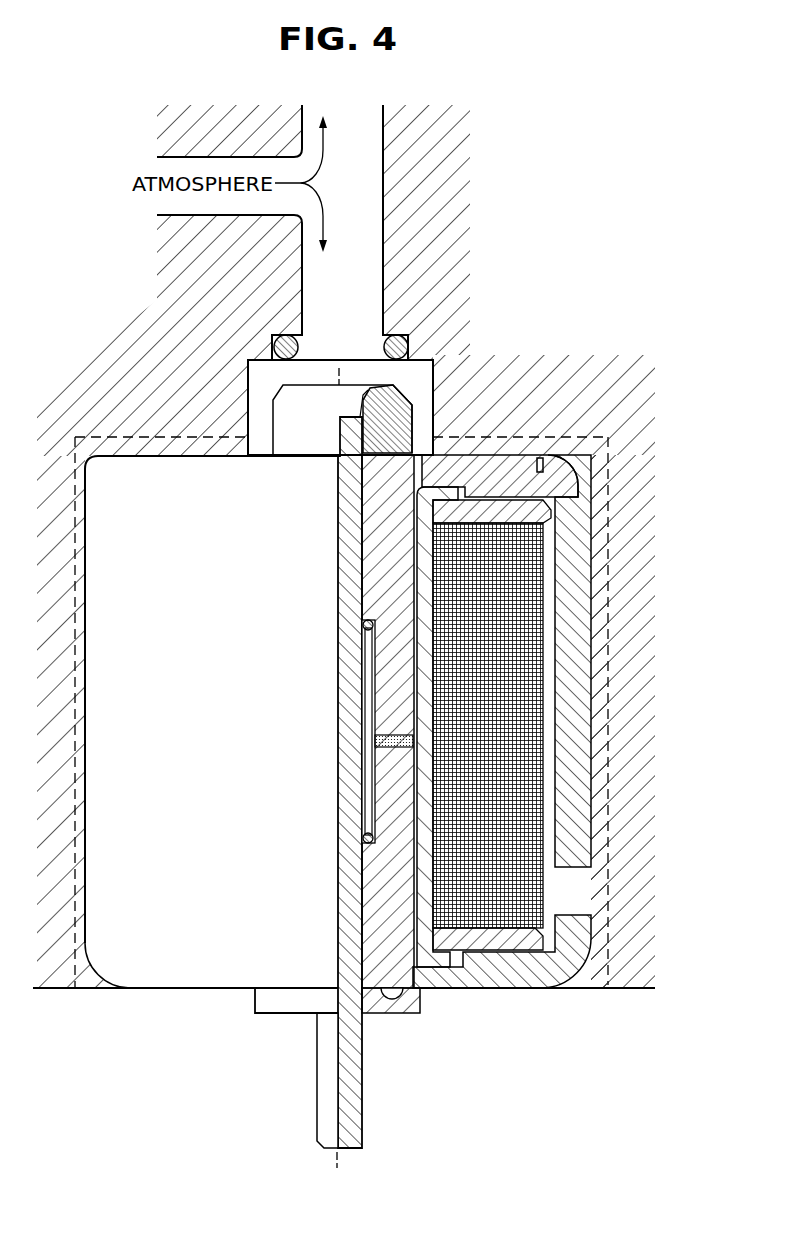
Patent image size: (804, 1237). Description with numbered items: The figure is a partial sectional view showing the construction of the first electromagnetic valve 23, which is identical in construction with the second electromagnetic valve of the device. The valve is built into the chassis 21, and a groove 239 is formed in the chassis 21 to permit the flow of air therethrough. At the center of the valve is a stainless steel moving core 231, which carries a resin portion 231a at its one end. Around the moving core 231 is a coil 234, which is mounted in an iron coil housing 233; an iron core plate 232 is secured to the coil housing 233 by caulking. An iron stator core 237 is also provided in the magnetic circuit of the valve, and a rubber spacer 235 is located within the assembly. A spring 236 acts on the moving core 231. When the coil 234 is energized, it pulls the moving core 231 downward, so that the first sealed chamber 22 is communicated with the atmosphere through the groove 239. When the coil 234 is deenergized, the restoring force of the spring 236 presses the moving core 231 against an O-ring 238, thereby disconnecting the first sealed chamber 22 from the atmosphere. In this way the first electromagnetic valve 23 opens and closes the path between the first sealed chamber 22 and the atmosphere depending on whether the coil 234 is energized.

The chassis 21 is at (694, 718).
The first sealed chamber 22 is at (513, 1048).
The first electromagnetic valve 23 is at (191, 988).
The moving core 231 is at (345, 532).
The resin portion 231a is at (412, 396).
The core plate 232 is at (522, 467).
The coil housing 233 is at (582, 537).
The coil 234 is at (527, 657).
The rubber spacer 235 is at (408, 743).
The spring 236 is at (368, 795).
The stator core 237 is at (405, 887).
The O-ring 238 is at (296, 343).
The groove 239 is at (598, 790).